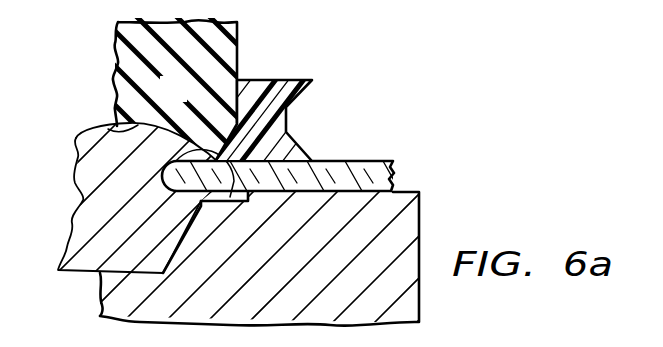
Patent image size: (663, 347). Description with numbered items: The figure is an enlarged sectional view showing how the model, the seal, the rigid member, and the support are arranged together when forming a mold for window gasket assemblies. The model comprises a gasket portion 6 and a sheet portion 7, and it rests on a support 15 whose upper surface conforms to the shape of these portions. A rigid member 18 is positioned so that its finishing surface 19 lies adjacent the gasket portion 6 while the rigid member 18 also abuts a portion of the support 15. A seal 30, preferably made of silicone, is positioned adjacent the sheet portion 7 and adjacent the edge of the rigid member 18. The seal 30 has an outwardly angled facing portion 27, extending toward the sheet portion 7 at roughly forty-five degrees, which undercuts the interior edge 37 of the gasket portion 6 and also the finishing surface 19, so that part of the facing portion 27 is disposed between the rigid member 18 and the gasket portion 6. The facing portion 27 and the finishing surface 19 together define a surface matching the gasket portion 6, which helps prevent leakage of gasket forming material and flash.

The gasket portion 6 is at (138, 250).
The sheet portion 7 is at (363, 161).
The support 15 is at (303, 270).
The rigid member 18 is at (160, 101).
The finishing surface 19 is at (109, 130).
The outwardly angled facing portion 27 is at (174, 152).
The seal 30 is at (280, 80).
The interior edge 37 is at (228, 193).